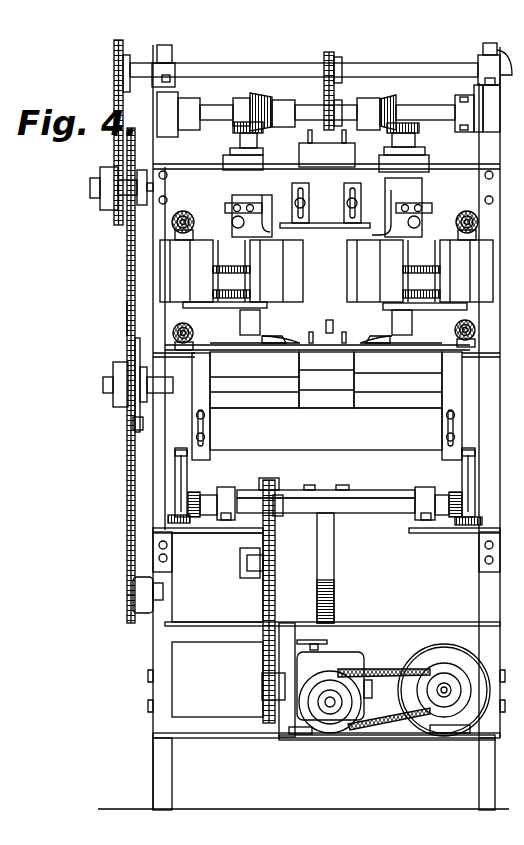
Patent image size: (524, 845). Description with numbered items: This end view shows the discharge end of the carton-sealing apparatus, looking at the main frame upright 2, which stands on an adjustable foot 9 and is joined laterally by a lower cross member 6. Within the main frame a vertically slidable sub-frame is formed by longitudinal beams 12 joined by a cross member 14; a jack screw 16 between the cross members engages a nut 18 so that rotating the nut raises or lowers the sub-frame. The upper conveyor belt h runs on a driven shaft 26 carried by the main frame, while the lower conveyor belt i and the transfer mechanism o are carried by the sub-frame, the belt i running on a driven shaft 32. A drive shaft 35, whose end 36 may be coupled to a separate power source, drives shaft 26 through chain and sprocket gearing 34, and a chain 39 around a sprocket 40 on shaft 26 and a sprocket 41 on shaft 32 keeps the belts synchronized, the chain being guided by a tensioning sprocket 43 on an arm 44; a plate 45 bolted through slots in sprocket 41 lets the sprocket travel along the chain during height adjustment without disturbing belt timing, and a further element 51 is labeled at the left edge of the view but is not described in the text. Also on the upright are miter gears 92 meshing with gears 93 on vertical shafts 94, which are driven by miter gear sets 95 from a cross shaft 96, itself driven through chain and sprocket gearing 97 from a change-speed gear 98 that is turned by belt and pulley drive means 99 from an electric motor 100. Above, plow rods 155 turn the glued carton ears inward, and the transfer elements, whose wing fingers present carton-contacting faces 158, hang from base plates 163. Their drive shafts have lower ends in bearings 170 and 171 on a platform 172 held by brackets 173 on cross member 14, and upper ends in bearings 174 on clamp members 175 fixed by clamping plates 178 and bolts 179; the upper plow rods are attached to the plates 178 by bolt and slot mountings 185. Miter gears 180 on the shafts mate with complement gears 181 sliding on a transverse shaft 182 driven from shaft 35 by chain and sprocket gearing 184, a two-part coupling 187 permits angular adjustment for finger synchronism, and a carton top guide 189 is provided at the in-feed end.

The upright 2 is at (155, 470).
The lower cross member 6 is at (210, 642).
The adjustable foot 9 is at (160, 767).
The longitudinal beam 12 is at (175, 480).
The cross member 14 is at (265, 448).
The jack screw 16 is at (336, 565).
The nut 18 is at (330, 650).
The driven shaft 26 is at (150, 187).
The driven shaft 32 is at (103, 386).
The chain and sprocket gearing 34 is at (112, 140).
The drive shaft 35 is at (415, 52).
The shaft end 36 is at (480, 50).
The chain 39 is at (128, 318).
The sprocket 40 is at (125, 152).
The sprocket 41 is at (135, 352).
The tensioning sprocket 43 is at (130, 596).
The arm 44 is at (157, 606).
The plate 45 is at (140, 418).
The element 51 is at (8, 383).
The miter gear 92 is at (190, 208).
The complemental gear 93 is at (192, 236).
The vertical shaft 94 is at (187, 478).
The miter gear set 95 is at (195, 522).
The cross shaft 96 is at (377, 505).
The chain and sprocket gearing 97 is at (264, 602).
The change-speed gear 98 is at (366, 662).
The belt and pulley drive means 99 is at (382, 727).
The electric motor 100 is at (442, 728).
The plow rod 155 is at (329, 263).
The carton-contacting face 158 is at (160, 270).
The base plate 163 is at (267, 308).
The bearing 170 is at (245, 337).
The bearing 171 is at (410, 328).
The platform 172 is at (268, 356).
The bracket 173 is at (205, 414).
The bearing 174 is at (235, 148).
The clamp member 175 is at (234, 172).
The clamping plate 178 is at (265, 192).
The bolt 179 is at (255, 208).
The miter gear 180 is at (250, 108).
The complement miter gear 181 is at (262, 124).
The transverse shaft 182 is at (205, 118).
The chain and sprocket gearing 184 is at (324, 92).
The bolt and slot mounting 185 is at (330, 221).
The two-part coupling 187 is at (233, 271).
The carton top guide 189 is at (378, 268).
The upper conveyor belt h is at (348, 152).
The lower conveyor belt i is at (348, 365).
The transfer mechanism o is at (327, 327).